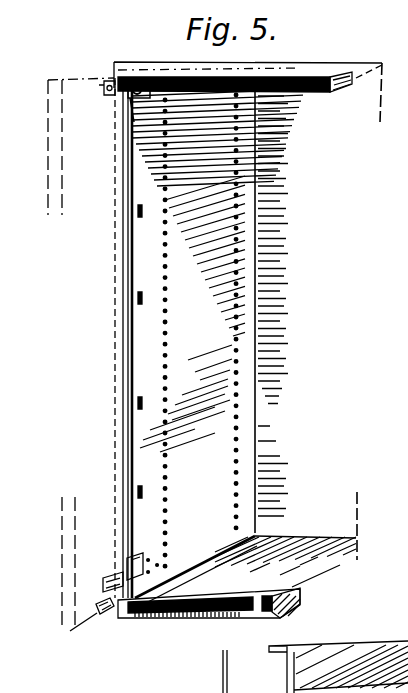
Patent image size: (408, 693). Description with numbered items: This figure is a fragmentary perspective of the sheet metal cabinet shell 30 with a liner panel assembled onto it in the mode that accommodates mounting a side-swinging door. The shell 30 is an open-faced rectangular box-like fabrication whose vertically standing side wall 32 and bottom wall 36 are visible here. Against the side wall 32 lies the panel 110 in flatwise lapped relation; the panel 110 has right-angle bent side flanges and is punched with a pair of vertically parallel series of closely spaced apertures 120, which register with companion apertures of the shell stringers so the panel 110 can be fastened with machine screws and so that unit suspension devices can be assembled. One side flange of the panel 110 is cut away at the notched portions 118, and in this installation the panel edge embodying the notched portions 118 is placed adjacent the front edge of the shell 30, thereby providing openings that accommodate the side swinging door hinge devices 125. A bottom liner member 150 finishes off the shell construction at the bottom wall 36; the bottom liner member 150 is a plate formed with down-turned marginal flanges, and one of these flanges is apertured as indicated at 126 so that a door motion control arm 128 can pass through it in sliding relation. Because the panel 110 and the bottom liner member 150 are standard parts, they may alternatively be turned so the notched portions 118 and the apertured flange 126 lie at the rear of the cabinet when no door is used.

The shell 30 is at (273, 273).
The side wall 32 is at (237, 361).
The bottom wall 36 is at (303, 602).
The panel 110 is at (212, 245).
The cut-away notched portion 118 is at (133, 106).
The apertures 120 is at (232, 195).
The side swinging door hinge devices 125 is at (104, 74).
The apertured flange 126 is at (222, 612).
The door motion control arm 128 is at (138, 612).
The bottom liner member 150 is at (263, 589).